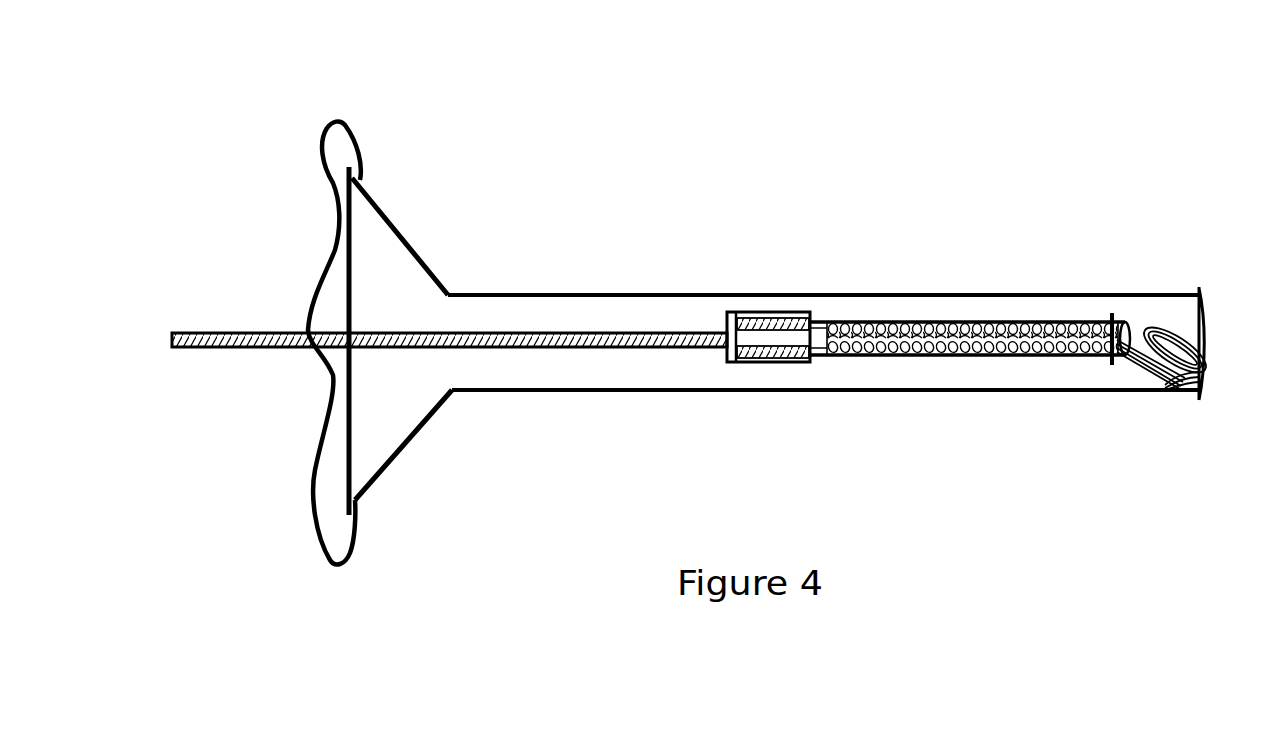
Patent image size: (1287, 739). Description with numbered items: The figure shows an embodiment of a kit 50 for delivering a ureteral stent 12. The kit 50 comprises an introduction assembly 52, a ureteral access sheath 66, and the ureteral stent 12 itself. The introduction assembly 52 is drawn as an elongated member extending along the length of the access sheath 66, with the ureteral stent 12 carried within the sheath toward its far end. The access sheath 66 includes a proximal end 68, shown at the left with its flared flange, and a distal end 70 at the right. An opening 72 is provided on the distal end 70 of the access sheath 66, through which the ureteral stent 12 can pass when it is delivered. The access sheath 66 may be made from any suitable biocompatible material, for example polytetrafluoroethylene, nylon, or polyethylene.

The kit 50 is at (222, 150).
The introduction assembly 52 is at (529, 333).
The ureteral stent 12 is at (925, 322).
The ureteral access sheath 66 is at (761, 392).
The proximal end 68 is at (332, 566).
The distal end 70 is at (1199, 390).
The opening 72 is at (1200, 295).